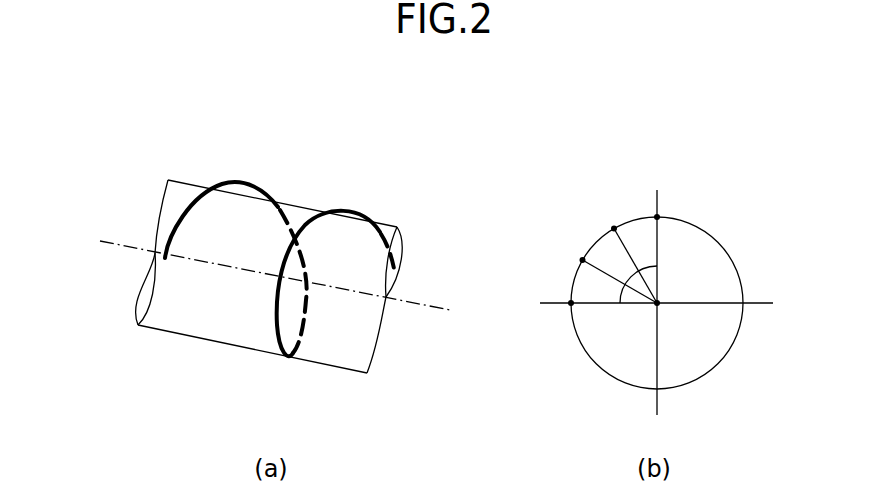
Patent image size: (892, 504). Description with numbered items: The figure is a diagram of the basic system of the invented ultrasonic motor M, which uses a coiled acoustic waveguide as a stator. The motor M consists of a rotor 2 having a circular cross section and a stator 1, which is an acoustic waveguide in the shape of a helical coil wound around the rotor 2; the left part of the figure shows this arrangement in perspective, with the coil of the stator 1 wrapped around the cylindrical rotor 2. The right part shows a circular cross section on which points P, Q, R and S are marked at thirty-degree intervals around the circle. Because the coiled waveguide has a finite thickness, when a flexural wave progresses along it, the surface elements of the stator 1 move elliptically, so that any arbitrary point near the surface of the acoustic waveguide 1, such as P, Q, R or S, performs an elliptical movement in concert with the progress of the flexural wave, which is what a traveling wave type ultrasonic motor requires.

The stator 1 is at (287, 357).
The rotor 2 is at (335, 353).
The motor M is at (340, 178).